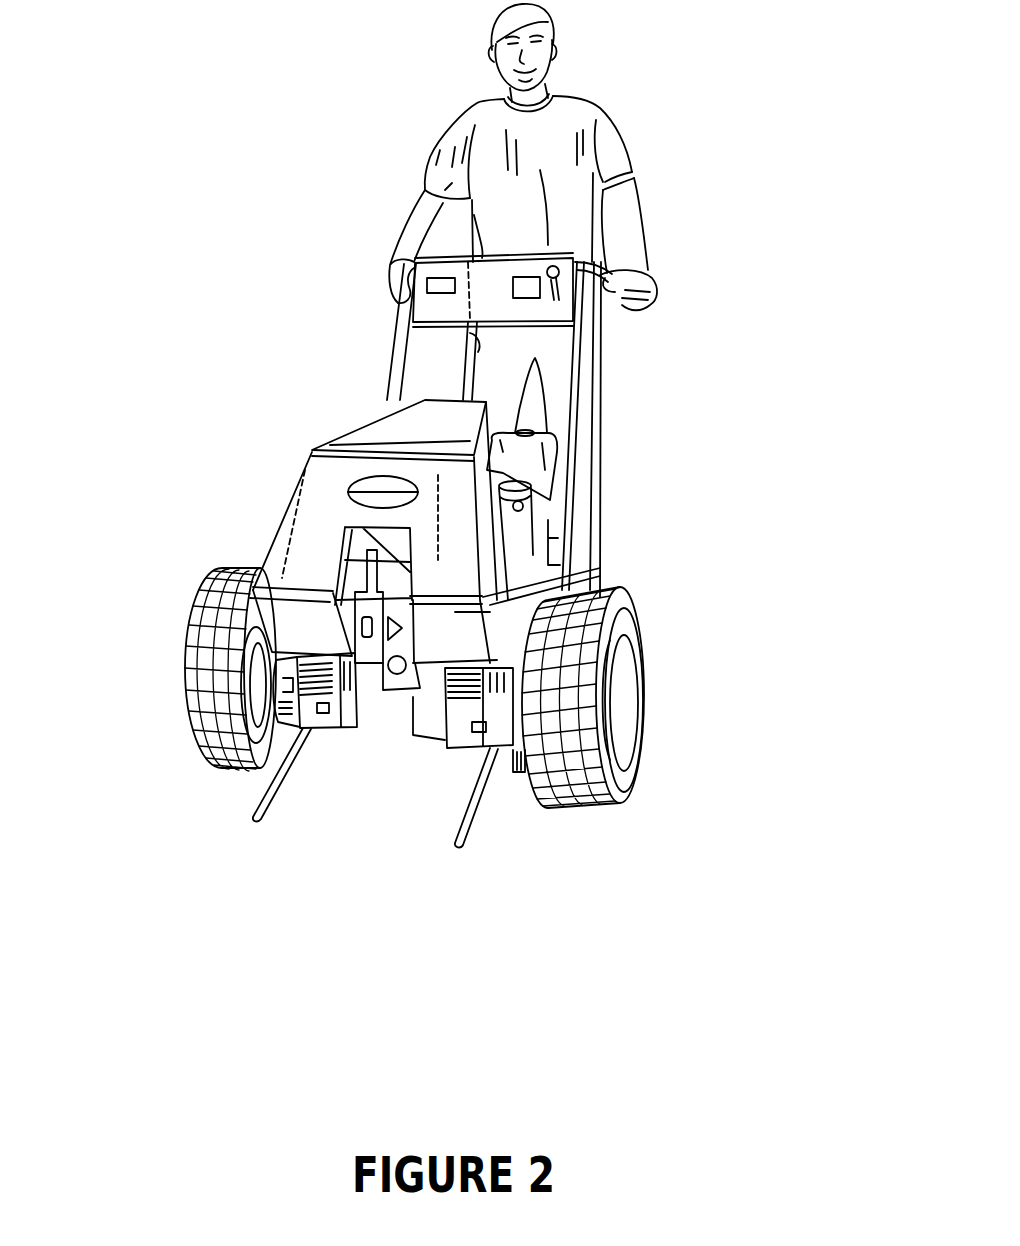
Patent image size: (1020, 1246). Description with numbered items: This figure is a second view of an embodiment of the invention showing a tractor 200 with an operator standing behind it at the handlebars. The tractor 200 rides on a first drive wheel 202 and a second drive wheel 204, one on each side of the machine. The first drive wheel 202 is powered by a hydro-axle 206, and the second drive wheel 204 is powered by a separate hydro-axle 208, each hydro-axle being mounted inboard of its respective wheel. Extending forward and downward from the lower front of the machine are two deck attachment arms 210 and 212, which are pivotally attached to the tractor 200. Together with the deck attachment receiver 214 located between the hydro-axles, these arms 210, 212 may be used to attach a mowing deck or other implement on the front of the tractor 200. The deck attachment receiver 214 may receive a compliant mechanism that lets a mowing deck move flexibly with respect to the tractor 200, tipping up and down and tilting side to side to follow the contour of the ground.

The tractor 200 is at (312, 487).
The first drive wheel 202 is at (640, 630).
The second drive wheel 204 is at (185, 640).
The hydro-axle 206 is at (452, 750).
The hydro-axle 208 is at (334, 733).
The deck attachment arm 210 is at (481, 800).
The deck attachment arm 212 is at (258, 785).
The deck attachment receiver 214 is at (405, 636).